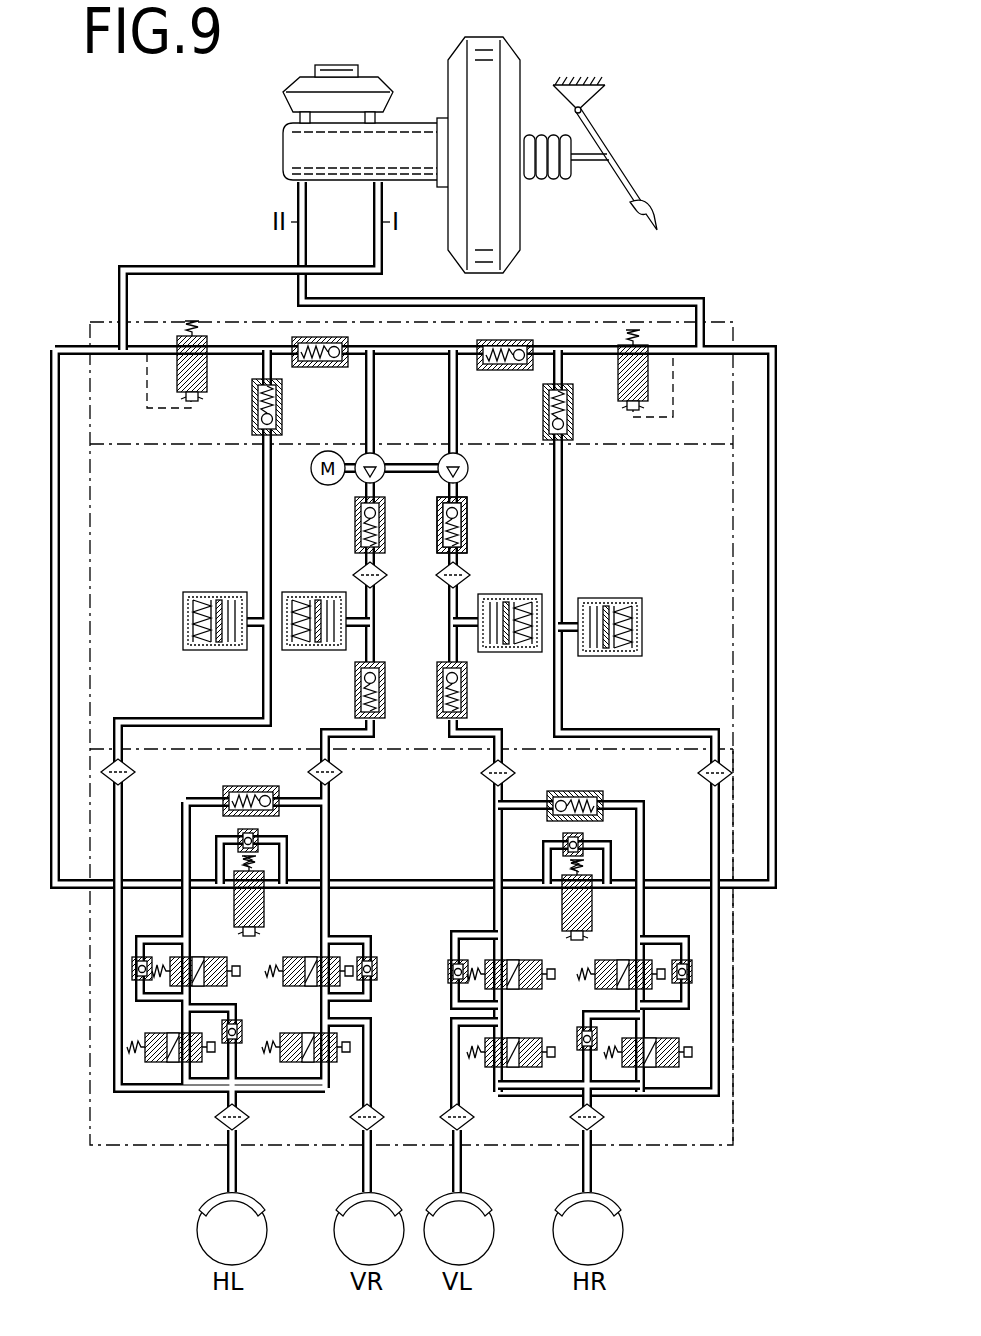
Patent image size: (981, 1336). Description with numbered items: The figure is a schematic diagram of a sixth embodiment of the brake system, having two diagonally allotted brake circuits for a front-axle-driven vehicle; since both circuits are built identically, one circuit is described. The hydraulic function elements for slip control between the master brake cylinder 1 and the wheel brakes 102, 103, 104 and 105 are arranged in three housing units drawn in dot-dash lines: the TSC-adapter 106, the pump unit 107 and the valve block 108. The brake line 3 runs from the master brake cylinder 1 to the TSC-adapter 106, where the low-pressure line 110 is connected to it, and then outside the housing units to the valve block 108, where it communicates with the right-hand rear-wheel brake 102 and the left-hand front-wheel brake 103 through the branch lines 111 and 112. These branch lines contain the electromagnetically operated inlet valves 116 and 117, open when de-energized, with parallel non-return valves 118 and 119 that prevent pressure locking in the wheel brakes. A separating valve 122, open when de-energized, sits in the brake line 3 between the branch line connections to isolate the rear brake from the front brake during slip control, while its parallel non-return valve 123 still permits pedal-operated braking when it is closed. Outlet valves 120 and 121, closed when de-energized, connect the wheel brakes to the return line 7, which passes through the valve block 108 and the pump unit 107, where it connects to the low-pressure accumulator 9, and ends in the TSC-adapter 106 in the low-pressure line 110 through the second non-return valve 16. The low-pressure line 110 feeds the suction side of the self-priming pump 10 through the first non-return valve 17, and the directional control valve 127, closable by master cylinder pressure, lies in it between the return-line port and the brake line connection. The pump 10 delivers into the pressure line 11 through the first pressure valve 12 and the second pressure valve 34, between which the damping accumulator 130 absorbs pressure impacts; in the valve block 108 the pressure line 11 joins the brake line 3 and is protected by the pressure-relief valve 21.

The master brake cylinder 1 is at (283, 140).
The brake line 3 is at (650, 302).
The return line 7 is at (620, 733).
The low-pressure accumulator 9 is at (641, 656).
The self-priming pump 10 is at (468, 468).
The pressure line 11 is at (466, 497).
The first pressure valve 12 is at (437, 528).
The second non-return valve 16 is at (545, 432).
The first non-return valve 17 is at (510, 342).
The pressure-relief valve 21 is at (556, 794).
The second pressure valve 34 is at (437, 700).
The right-hand rear-wheel brake 102 is at (608, 1205).
The left-hand front-wheel brake 103 is at (475, 1205).
The wheel brake 104 is at (348, 1205).
The wheel brake 105 is at (212, 1205).
The TSC-adapter 106 is at (785, 422).
The pump unit 107 is at (789, 687).
The valve block 108 is at (748, 1038).
The low-pressure line 110 is at (705, 305).
The branch line 111 is at (643, 920).
The branch line 112 is at (497, 900).
The inlet valve 116 is at (631, 963).
The inlet valve 117 is at (512, 990).
The non-return valve 118 is at (718, 955).
The non-return valve 119 is at (450, 960).
The outlet valve 120 is at (648, 1068).
The outlet valve 121 is at (512, 1068).
The separating valve 122 is at (562, 906).
The non-return valve 123 is at (563, 840).
The hydraulic two-way/two-position directional control valve 127 is at (622, 345).
The damping accumulator 130 is at (510, 654).